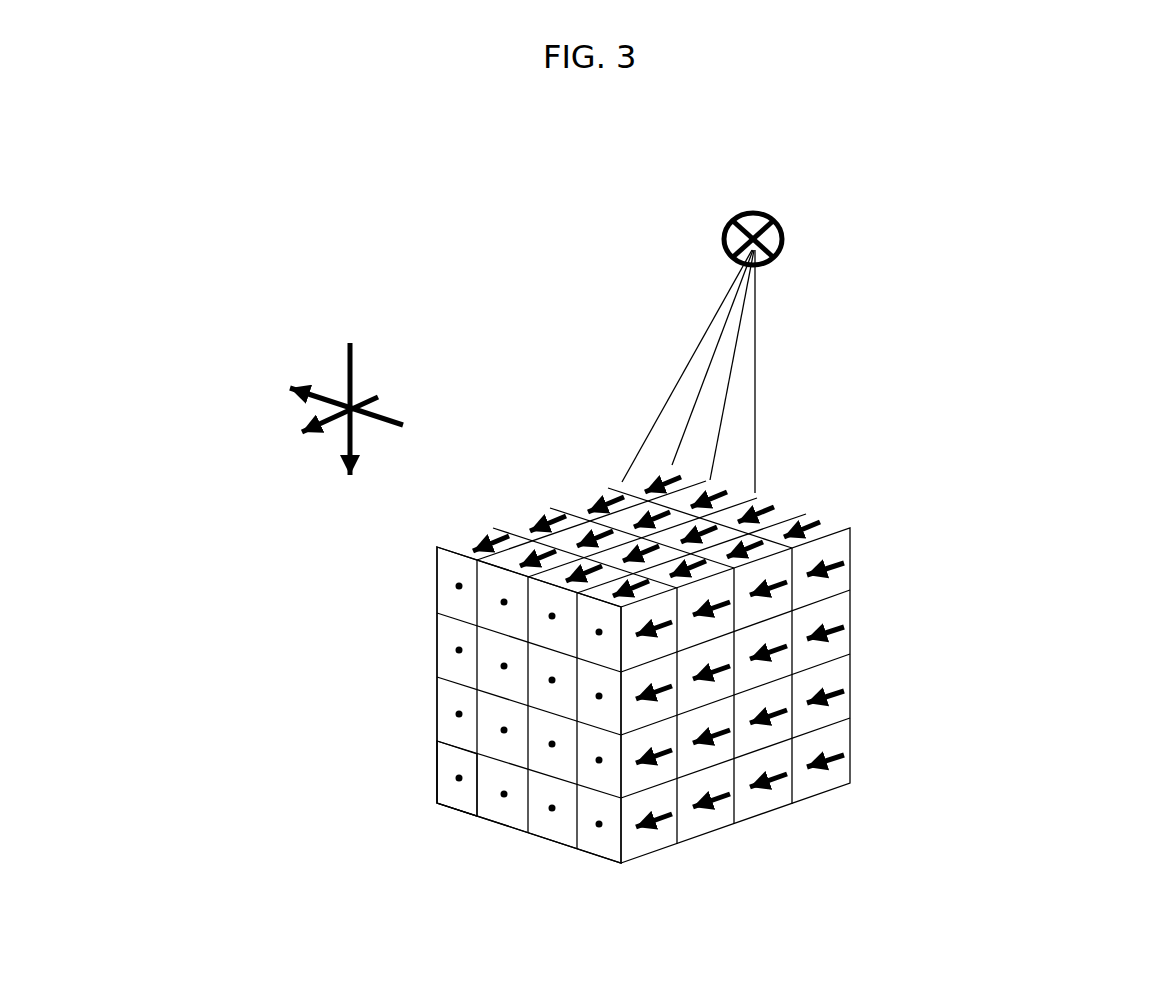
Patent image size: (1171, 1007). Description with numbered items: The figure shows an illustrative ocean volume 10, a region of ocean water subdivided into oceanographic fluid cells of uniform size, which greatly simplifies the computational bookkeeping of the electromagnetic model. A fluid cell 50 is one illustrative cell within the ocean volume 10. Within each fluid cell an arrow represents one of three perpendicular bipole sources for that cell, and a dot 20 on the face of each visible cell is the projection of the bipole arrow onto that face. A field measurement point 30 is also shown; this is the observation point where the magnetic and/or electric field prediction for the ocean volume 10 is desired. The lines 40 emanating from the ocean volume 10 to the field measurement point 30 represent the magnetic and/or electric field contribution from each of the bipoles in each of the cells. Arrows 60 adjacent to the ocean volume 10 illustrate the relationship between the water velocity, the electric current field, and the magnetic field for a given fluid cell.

The ocean volume 10 is at (714, 666).
The dot 20 is at (437, 780).
The field measurement point 30 is at (717, 230).
The lines 40 is at (673, 350).
The fluid cell 50 is at (437, 700).
The arrows 60 is at (327, 377).